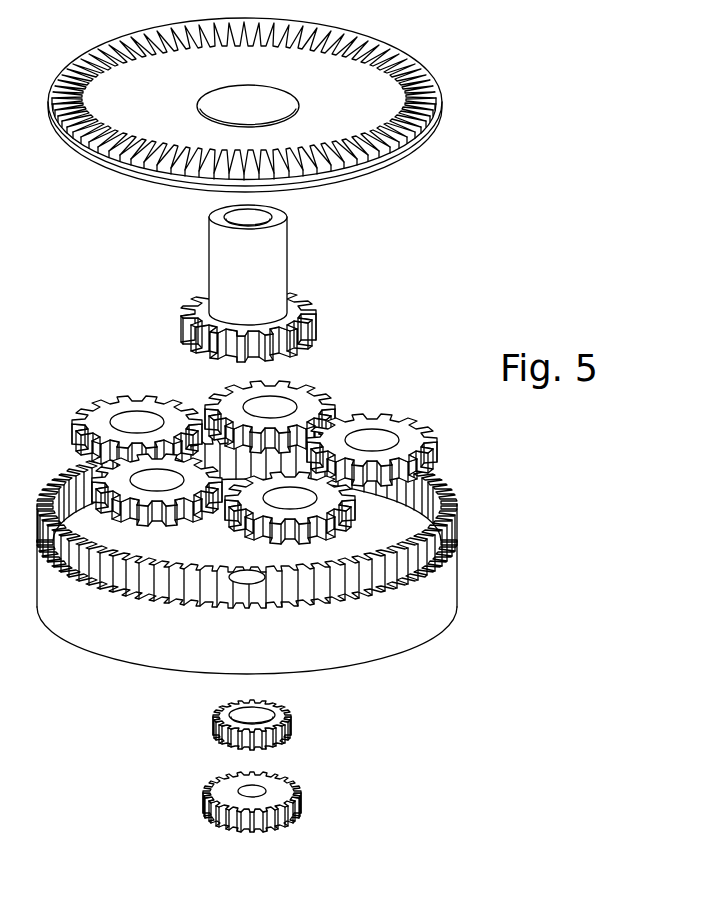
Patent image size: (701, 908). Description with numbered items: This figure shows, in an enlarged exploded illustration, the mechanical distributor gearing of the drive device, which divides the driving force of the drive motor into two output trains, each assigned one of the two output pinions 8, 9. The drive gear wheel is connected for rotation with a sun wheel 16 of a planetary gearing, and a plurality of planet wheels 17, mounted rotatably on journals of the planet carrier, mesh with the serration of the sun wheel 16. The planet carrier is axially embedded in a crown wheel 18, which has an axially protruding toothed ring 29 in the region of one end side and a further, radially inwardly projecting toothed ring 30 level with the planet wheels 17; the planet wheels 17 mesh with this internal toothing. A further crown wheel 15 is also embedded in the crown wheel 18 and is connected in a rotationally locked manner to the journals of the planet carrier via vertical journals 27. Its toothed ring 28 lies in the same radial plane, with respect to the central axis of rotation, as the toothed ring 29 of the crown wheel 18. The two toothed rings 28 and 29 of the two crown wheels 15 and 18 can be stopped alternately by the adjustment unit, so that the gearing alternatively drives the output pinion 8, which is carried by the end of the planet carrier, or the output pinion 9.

The output pinion 8 is at (303, 805).
The output pinion 9 is at (290, 732).
The crown wheel 15 is at (355, 105).
The sun wheel 16 is at (279, 278).
The planet wheels 17 is at (146, 477).
The crown wheel 18 is at (457, 590).
The vertical journals 27 is at (297, 190).
The toothed ring 28 is at (407, 55).
The toothed ring 29 is at (455, 512).
The toothed ring 30 is at (373, 540).